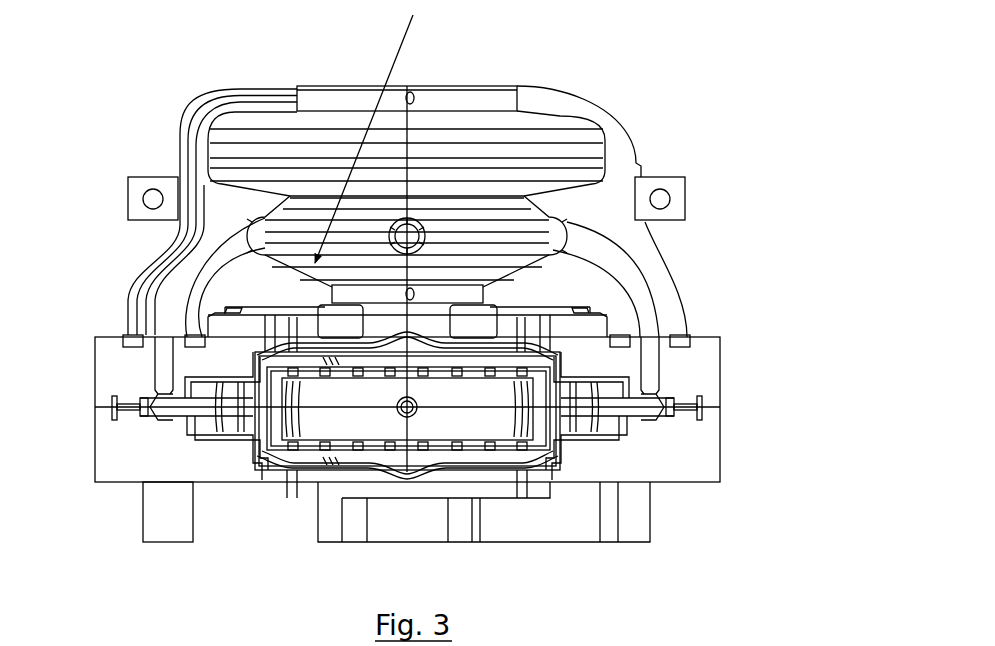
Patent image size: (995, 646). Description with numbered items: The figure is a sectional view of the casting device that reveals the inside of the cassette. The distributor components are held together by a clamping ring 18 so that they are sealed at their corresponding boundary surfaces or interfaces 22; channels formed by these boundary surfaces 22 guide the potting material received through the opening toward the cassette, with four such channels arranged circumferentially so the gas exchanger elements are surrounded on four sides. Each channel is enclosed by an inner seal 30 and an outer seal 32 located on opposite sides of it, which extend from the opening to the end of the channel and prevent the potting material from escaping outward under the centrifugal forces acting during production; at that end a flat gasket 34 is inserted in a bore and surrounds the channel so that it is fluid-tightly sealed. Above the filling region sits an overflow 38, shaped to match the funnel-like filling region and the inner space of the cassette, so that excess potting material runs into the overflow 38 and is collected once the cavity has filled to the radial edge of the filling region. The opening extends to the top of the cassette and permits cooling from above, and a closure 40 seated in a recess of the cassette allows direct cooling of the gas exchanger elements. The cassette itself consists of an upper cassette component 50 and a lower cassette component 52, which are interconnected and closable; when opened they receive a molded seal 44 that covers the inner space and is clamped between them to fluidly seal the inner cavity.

The clamping ring 18 is at (706, 194).
The boundary surfaces or interfaces 22 is at (141, 257).
The inner seal 30 is at (194, 111).
The outer seal 32 is at (212, 280).
The flat gasket 34 is at (114, 336).
The overflow 38 is at (579, 156).
The closure 40 is at (401, 477).
The molded seal 44 is at (590, 436).
The upper cassette component 50 is at (734, 370).
The lower cassette component 52 is at (734, 450).